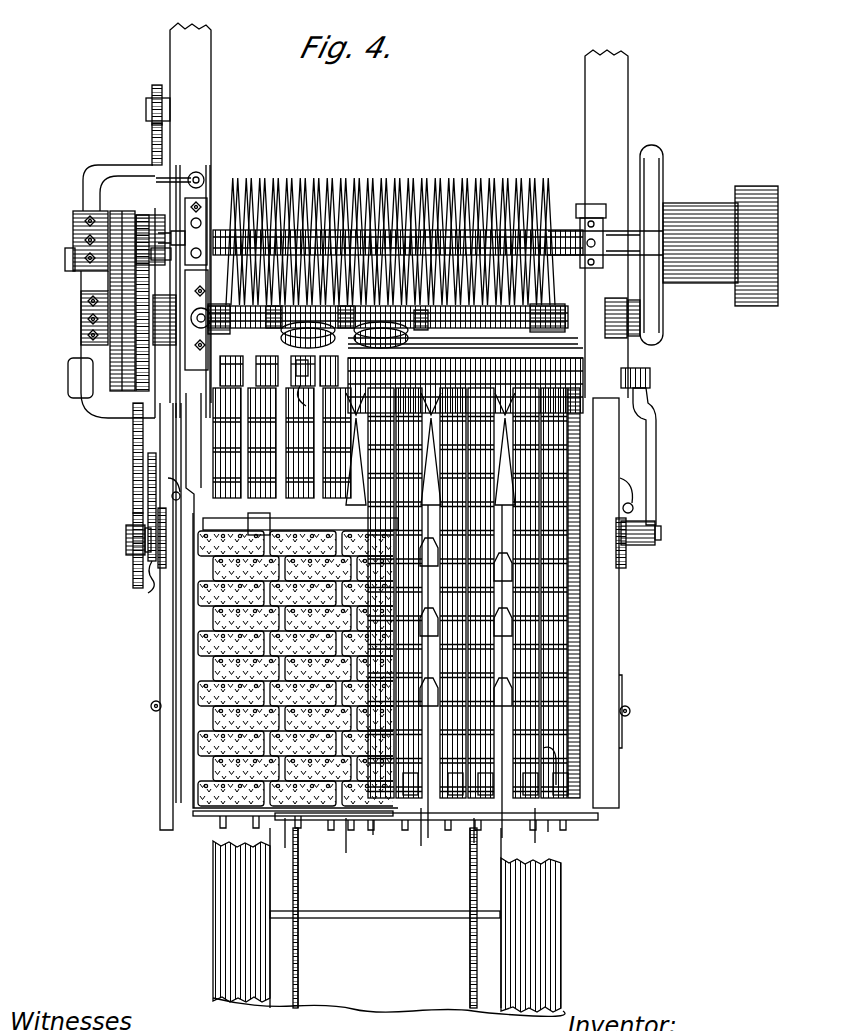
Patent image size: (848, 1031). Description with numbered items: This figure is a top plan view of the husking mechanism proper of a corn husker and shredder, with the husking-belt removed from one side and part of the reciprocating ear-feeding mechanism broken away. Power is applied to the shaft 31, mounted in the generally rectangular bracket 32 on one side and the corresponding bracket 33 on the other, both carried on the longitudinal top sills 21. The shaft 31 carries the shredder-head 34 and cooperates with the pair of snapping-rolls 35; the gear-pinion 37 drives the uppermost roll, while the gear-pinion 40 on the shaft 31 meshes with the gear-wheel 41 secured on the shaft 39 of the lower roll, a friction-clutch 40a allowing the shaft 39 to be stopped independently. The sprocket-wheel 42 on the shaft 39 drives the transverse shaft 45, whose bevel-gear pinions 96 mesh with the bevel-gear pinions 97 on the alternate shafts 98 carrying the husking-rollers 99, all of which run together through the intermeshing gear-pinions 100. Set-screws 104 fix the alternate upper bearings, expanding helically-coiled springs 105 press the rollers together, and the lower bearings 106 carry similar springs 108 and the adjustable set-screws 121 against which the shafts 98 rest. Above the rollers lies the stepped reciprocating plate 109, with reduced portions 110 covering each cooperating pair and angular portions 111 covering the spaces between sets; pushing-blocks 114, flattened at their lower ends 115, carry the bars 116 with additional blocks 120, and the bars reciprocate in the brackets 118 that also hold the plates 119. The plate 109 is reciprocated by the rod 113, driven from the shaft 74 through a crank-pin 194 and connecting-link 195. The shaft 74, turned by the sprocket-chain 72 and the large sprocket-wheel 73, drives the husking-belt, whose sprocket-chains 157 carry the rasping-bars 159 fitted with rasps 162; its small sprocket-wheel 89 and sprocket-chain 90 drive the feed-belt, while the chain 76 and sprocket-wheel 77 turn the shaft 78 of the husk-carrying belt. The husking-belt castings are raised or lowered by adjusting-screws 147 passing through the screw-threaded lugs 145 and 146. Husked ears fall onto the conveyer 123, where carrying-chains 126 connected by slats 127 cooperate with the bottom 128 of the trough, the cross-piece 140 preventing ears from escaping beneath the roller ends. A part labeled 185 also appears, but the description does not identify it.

The longitudinal top sills 21 is at (190, 60).
The shaft 31 is at (205, 225).
The generally rectangular bracket 32 is at (190, 185).
The corresponding bracket 33 is at (581, 212).
The shredder-head 34 is at (440, 190).
The snapping-rolls 35 is at (522, 310).
The gear-pinion 37 is at (155, 337).
The shaft 39 is at (73, 328).
The gear-pinion 40 is at (100, 205).
The friction-clutch 40a is at (148, 172).
The gear-wheel 41 is at (102, 365).
The sprocket-wheel 42 is at (108, 375).
The transverse shaft 45 is at (410, 318).
The sprocket-chain 72 is at (125, 440).
The large sprocket-wheel 73 is at (125, 568).
The shaft 74 is at (118, 532).
The chain 76 is at (144, 136).
The sprocket-wheel 77 is at (144, 80).
The shaft 78 is at (300, 320).
The small sprocket-wheel 89 is at (143, 584).
The sprocket-chain 90 is at (140, 470).
The bevel-gear pinions 96 is at (368, 322).
The bevel-gear pinions 97 is at (414, 320).
The alternate shafts 98 is at (268, 316).
The husking-rollers 99 is at (396, 593).
The gear-pinions 100 is at (420, 333).
The set-screws 104 is at (249, 371).
The expanding helically-coiled springs 105 is at (309, 371).
The bearings 106 is at (470, 768).
The helically-coiled expanding-springs 108 is at (495, 768).
The stepped reciprocating plate 109 is at (540, 338).
The reduced portions 110 is at (465, 385).
The angular portions 111 is at (465, 380).
The rod 113 is at (642, 368).
The pushing-blocks 114 is at (443, 410).
The flattened lower ends 115 is at (418, 480).
The bars 116 is at (422, 578).
The brackets 118 is at (484, 827).
The plates 119 is at (548, 740).
The additional blocks 120 is at (422, 548).
The adjustable set-screw 121 is at (245, 812).
The conveyer 123 is at (510, 947).
The carrying-chains 126 is at (285, 926).
The slats 127 is at (428, 886).
The bottom 128 is at (340, 887).
The cross-piece 140 is at (382, 839).
The screw-threaded lug 145 is at (165, 475).
The screw-threaded lug 146 is at (143, 696).
The adjusting-screws 147 is at (146, 700).
The sprocket-chains 157 is at (240, 512).
The rasping-bars 159 is at (195, 618).
The rasps 162 is at (200, 655).
The ratchet 185 is at (125, 510).
The crank-pin 194 is at (653, 527).
The connecting-link 195 is at (648, 466).